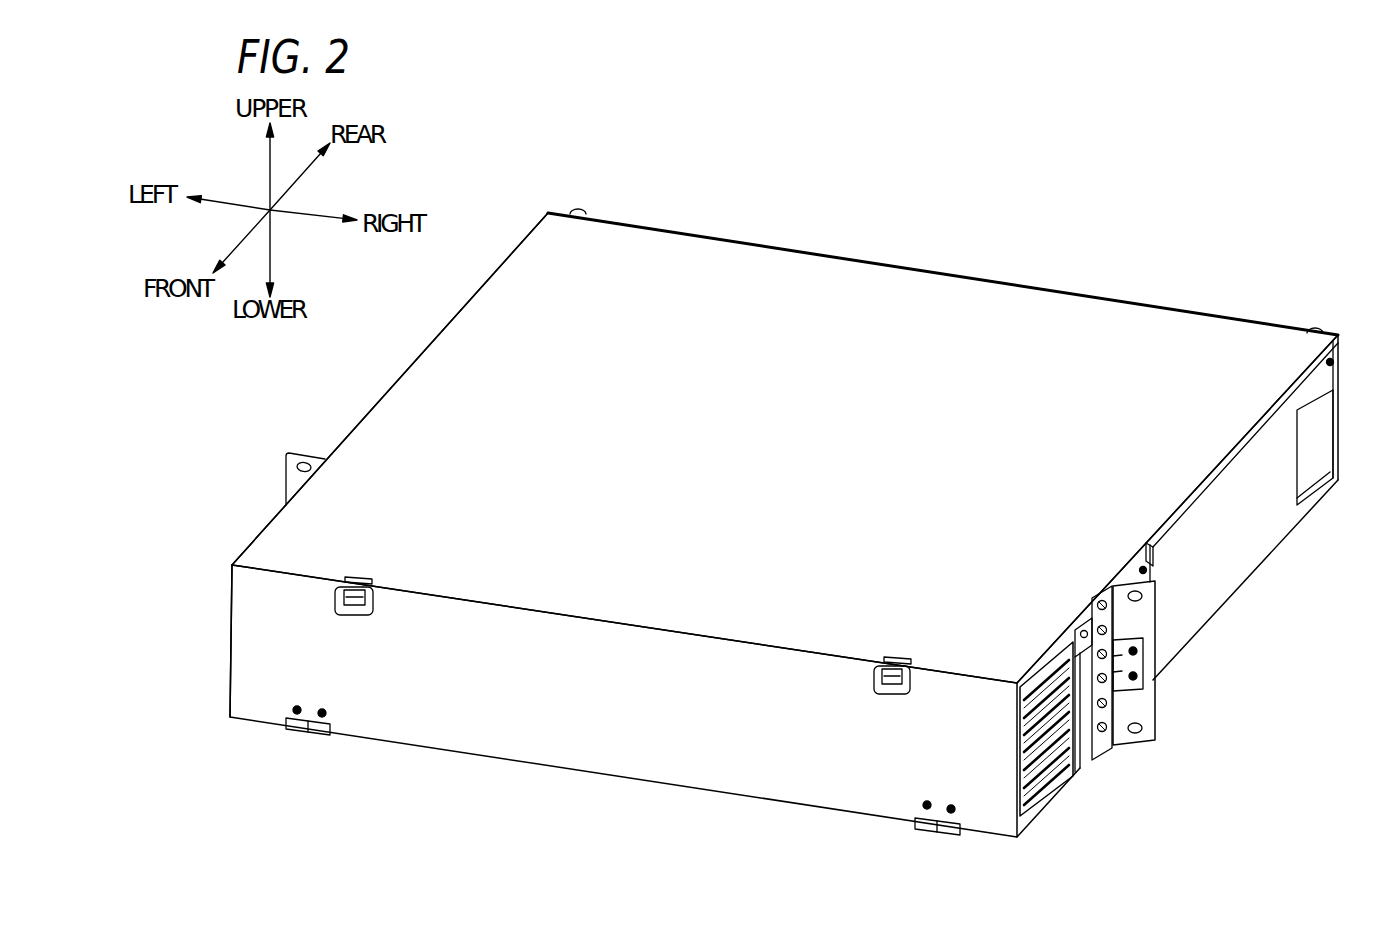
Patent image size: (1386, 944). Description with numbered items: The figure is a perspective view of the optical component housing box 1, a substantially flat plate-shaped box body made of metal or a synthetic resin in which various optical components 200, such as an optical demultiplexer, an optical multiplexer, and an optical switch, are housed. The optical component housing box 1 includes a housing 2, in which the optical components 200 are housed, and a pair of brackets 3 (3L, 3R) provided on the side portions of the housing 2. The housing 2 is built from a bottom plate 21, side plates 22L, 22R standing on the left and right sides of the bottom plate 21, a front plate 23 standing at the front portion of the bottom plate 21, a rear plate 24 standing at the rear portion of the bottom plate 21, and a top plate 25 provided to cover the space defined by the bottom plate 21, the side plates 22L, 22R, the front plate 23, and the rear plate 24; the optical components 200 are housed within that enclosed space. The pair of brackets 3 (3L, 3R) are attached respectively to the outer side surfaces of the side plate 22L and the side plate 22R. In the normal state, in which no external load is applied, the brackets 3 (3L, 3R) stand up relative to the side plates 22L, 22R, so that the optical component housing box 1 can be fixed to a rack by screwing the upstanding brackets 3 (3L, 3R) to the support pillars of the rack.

The optical component housing box 1 is at (740, 503).
The housing 2 is at (782, 534).
The bottom plate 21 is at (623, 728).
The side plate 22L is at (400, 427).
The side plate 22R is at (1220, 553).
The front plate 23 is at (775, 757).
The rear plate 24 is at (785, 429).
The top plate 25 is at (795, 297).
The optical components 200 is at (1050, 768).
The brackets 3 is at (711, 599).
The bracket 3L is at (285, 483).
The bracket 3R is at (1143, 703).